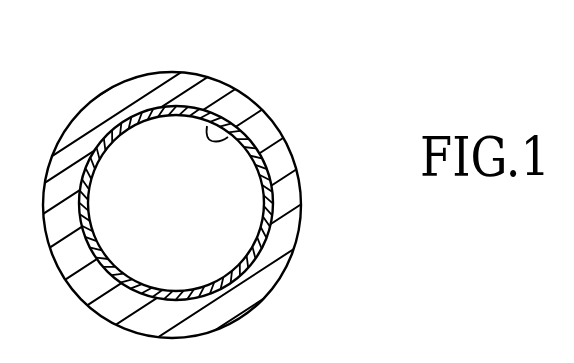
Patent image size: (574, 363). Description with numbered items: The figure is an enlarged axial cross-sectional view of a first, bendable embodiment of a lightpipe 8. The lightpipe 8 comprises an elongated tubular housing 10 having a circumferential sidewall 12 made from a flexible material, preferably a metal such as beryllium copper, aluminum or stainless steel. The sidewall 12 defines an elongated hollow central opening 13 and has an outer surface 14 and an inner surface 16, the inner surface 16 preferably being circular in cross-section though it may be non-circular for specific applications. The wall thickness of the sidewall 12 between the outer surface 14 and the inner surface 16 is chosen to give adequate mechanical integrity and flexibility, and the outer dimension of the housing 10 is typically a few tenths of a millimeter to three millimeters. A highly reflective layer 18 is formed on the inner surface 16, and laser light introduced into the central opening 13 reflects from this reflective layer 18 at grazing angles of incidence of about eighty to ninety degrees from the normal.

The lightpipe 8 is at (318, 142).
The elongated tubular housing 10 is at (266, 120).
The circumferential sidewall 12 is at (288, 205).
The elongated hollow central opening 13 is at (180, 131).
The outer surface 14 is at (82, 111).
The inner surface 16 is at (214, 114).
The highly reflective layer 18 is at (267, 238).